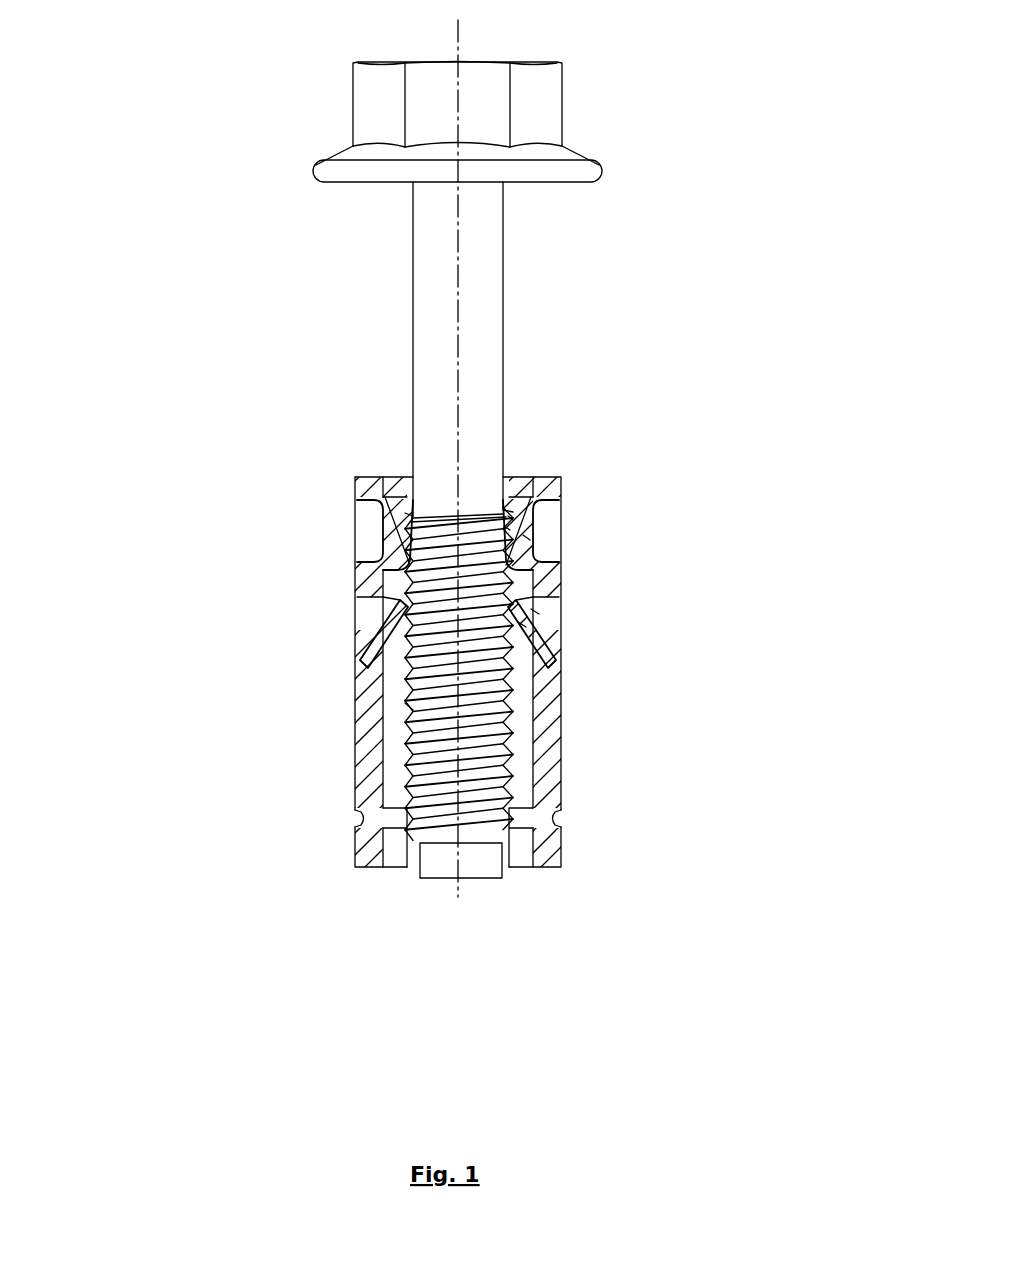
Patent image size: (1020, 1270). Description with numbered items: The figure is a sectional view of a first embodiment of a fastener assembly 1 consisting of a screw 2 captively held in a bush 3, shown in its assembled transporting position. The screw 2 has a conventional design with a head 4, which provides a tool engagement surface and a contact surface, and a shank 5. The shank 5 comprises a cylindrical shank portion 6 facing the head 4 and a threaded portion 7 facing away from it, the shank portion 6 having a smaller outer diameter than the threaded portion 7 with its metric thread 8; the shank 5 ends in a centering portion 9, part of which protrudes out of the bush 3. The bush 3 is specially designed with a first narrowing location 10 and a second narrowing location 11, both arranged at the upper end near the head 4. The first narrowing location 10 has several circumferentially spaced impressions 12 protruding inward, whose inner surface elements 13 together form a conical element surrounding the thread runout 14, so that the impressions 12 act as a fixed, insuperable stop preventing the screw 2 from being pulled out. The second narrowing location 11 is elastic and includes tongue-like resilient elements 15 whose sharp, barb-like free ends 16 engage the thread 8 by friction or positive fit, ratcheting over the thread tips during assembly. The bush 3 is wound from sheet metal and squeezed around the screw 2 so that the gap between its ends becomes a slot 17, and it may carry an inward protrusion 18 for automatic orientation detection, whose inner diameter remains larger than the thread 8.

The fastener assembly 1 is at (243, 265).
The screw 2 is at (412, 342).
The bush 3 is at (355, 752).
The head 4 is at (563, 107).
The shank 5 is at (505, 260).
The shank portion 6 is at (480, 332).
The threaded portion 7 is at (490, 703).
The thread 8 is at (515, 762).
The centering portion 9 is at (472, 862).
The first narrowing location 10 is at (385, 532).
The second narrowing location 11 is at (385, 622).
The impressions 12 is at (508, 526).
The surface elements 13 is at (513, 516).
The thread runout 14 is at (527, 537).
The resilient elements 15 is at (522, 624).
The free ends 16 is at (535, 611).
The slot 17 is at (410, 708).
The protrusion 18 is at (365, 815).